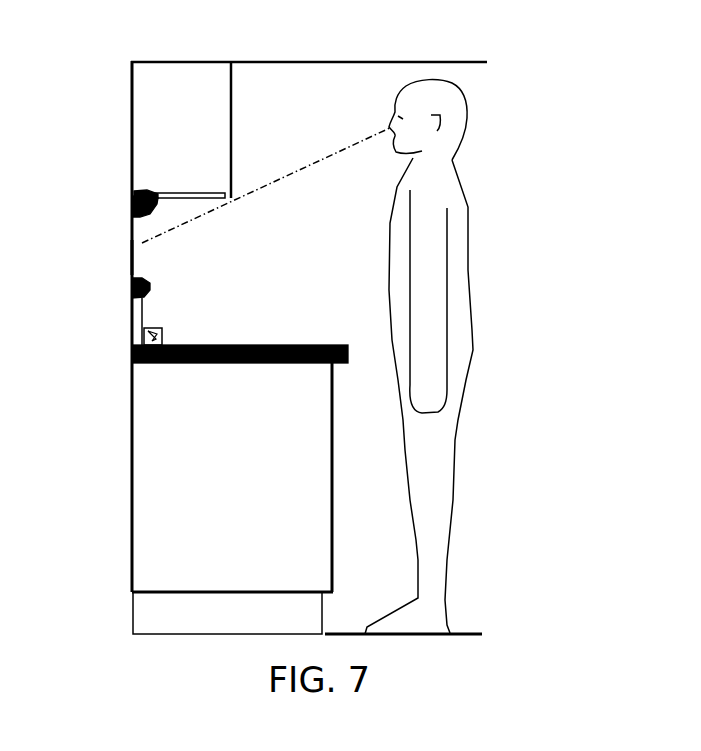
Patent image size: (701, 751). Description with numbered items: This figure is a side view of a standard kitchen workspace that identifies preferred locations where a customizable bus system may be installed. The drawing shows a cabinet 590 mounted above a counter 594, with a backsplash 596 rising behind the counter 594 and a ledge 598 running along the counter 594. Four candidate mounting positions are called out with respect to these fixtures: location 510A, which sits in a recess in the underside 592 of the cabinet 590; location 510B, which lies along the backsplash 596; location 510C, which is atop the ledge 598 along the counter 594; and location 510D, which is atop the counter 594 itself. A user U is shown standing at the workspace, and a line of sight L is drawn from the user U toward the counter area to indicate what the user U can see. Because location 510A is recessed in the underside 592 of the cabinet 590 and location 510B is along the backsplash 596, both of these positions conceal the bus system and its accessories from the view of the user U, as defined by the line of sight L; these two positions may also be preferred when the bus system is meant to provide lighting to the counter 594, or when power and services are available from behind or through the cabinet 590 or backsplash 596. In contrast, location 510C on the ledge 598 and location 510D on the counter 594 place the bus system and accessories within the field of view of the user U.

The cabinet 590 is at (217, 93).
The underside 592 is at (197, 195).
The counter 594 is at (310, 505).
The backsplash 596 is at (134, 258).
The ledge 598 is at (144, 310).
The location 510A is at (150, 192).
The location 510B is at (131, 210).
The location 510C is at (130, 290).
The location 510D is at (151, 334).
The line of sight L is at (348, 142).
The user U is at (467, 298).